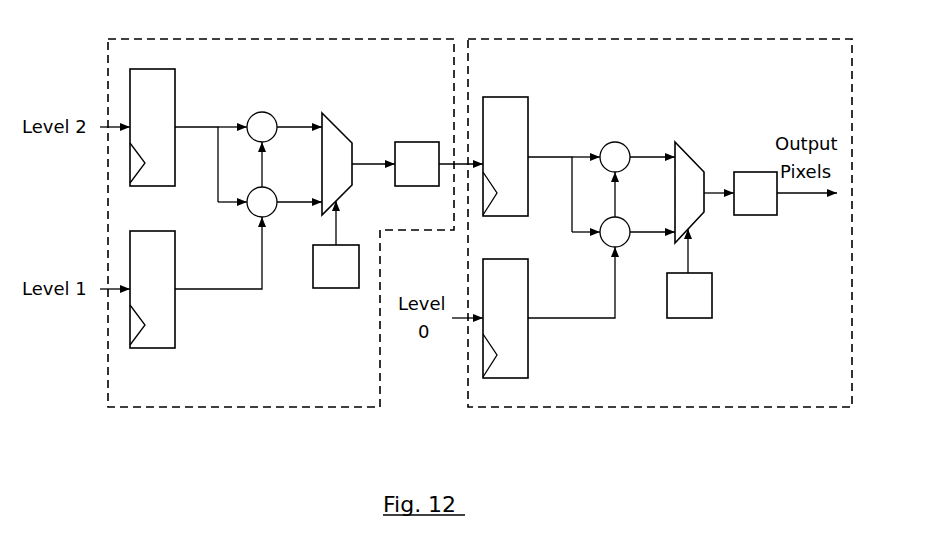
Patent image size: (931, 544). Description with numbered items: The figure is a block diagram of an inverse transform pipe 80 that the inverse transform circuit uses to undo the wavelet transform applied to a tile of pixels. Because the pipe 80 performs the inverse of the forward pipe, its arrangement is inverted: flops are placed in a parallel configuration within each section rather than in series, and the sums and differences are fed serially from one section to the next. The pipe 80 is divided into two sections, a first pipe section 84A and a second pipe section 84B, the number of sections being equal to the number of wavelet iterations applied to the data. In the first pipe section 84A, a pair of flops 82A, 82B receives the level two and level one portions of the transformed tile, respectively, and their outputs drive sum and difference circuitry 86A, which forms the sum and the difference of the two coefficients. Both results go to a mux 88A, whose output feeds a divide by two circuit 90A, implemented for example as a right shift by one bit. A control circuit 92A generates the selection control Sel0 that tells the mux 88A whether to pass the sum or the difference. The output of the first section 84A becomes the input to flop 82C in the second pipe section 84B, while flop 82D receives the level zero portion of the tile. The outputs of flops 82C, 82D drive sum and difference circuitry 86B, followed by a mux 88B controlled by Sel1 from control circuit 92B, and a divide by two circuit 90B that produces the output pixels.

The inverse transform pipe 80 is at (233, 467).
The flop 82A is at (188, 114).
The flop 82B is at (152, 349).
The flop 82C is at (542, 137).
The flop 82D is at (543, 331).
The pipe section 84A is at (280, 38).
The pipe section 84B is at (558, 38).
The sum and difference circuitry 86A is at (265, 93).
The sum and difference circuitry 86B is at (617, 108).
The mux 88A is at (380, 137).
The mux 88B is at (734, 158).
The divide by 2 circuit 90A is at (401, 143).
The divide by 2 circuit 90B is at (740, 172).
The control circuit 92A is at (322, 265).
The control circuit 92B is at (677, 294).